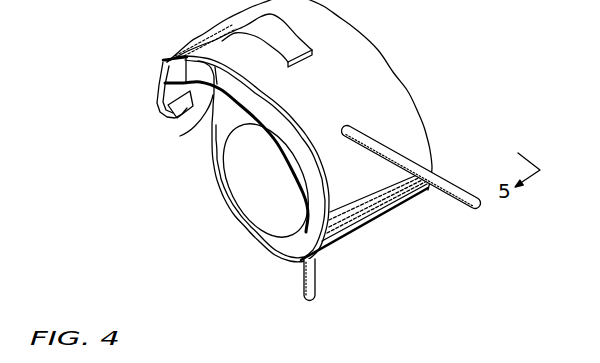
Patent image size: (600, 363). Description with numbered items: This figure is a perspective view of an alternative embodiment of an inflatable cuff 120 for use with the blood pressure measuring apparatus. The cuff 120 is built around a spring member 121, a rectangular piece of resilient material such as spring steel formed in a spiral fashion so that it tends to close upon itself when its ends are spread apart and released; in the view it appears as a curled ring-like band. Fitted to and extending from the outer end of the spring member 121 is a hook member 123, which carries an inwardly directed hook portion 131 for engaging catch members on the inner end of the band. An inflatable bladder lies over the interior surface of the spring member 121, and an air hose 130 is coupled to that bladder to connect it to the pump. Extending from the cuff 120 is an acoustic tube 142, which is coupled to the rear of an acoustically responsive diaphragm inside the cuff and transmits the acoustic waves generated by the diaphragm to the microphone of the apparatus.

The inflatable cuff 120 is at (425, 115).
The spring member 121 is at (180, 136).
The hook member 123 is at (191, 37).
The air hose 130 is at (451, 200).
The hook portion 131 is at (173, 117).
The acoustic tube 142 is at (317, 276).